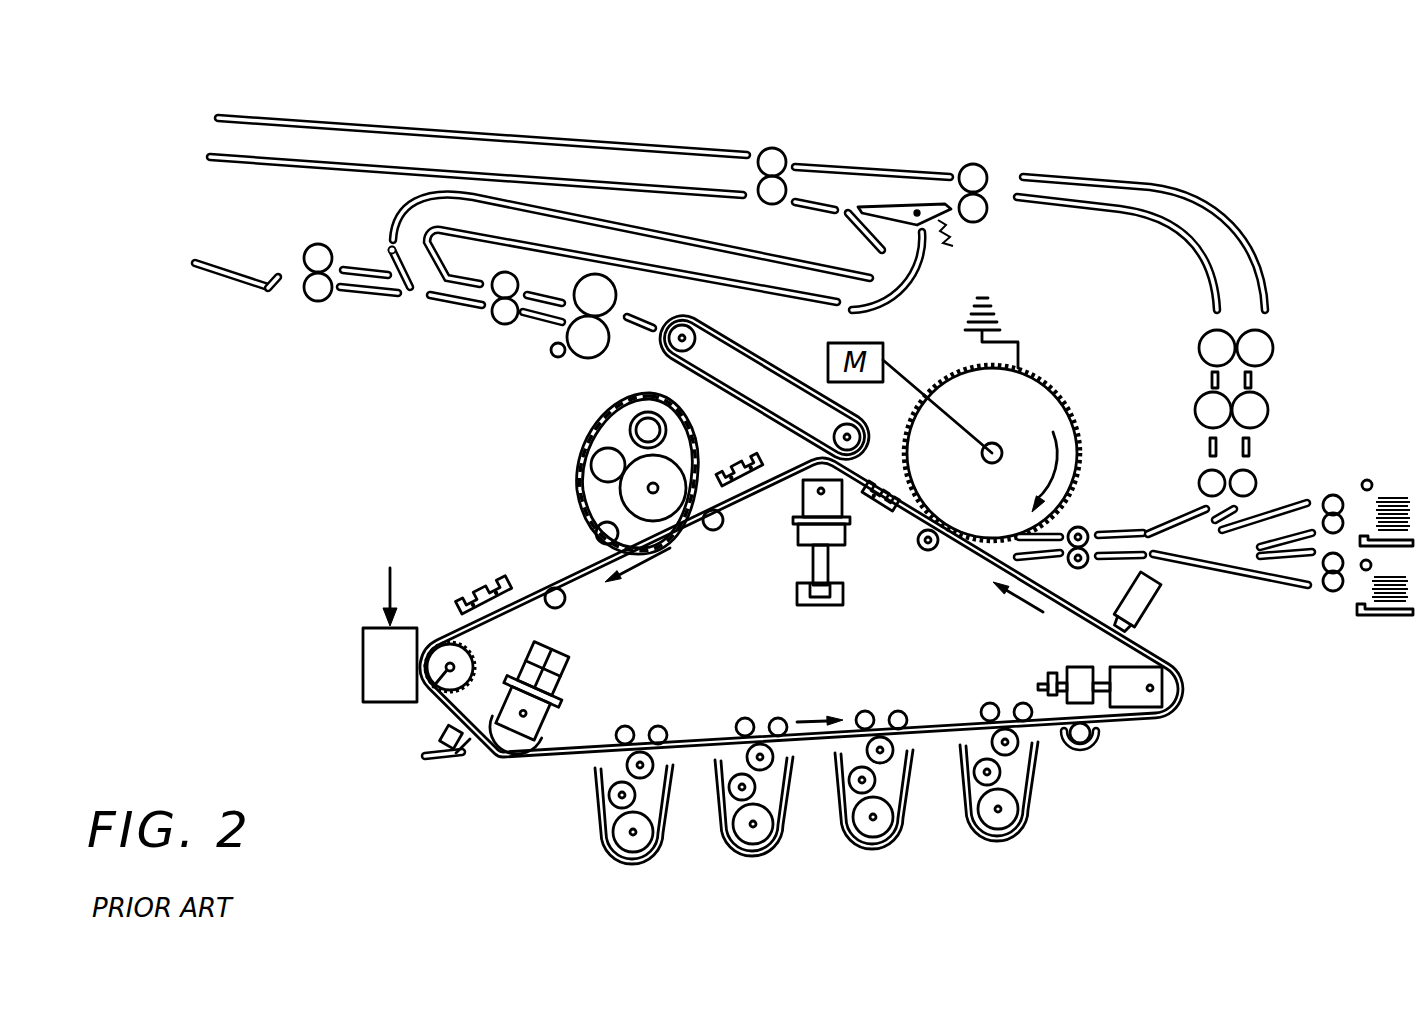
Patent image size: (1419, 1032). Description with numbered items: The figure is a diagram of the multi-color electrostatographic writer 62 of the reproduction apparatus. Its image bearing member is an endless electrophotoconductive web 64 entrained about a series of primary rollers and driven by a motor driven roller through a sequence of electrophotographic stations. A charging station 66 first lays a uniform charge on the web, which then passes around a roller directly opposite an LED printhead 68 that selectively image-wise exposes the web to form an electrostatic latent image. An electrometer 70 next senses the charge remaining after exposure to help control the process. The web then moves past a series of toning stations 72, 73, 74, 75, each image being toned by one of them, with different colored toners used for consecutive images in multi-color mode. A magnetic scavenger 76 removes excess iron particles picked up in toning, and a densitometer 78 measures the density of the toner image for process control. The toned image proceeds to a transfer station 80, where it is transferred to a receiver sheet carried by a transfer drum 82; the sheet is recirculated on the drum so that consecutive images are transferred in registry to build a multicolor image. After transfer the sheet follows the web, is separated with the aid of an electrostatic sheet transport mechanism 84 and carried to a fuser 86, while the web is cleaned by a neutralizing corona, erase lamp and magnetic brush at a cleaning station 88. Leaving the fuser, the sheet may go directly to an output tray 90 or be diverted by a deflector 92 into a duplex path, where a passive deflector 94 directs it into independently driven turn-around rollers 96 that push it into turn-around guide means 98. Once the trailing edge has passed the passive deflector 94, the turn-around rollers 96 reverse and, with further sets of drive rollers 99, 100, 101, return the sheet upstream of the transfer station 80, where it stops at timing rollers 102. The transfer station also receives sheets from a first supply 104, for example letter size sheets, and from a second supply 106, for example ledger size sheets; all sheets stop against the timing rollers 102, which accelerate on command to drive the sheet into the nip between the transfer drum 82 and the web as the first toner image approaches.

The writer 62 is at (1118, 118).
The electrophotoconductive web 64 is at (573, 760).
The charging station 66 is at (490, 590).
The LED printhead 68 is at (363, 662).
The electrometer 70 is at (458, 760).
The toning station 72 is at (668, 833).
The toning station 73 is at (788, 828).
The toning station 74 is at (910, 822).
The toning station 75 is at (1037, 816).
The magnetic scavenger 76 is at (1087, 748).
The densitometer 78 is at (1150, 583).
The transfer station 80 is at (1086, 504).
The transfer drum 82 is at (1050, 402).
The electrostatic sheet transport mechanism 84 is at (789, 366).
The fuser 86 is at (608, 300).
The cleaning station 88 is at (743, 418).
The output tray 90 is at (253, 287).
The deflector 92 is at (412, 290).
The passive deflector 94 is at (888, 208).
The turn-around rollers 96 is at (773, 148).
The turn-around guide means 98 is at (557, 162).
The drive rollers 99 is at (973, 165).
The drive rollers 100 is at (1262, 352).
The drive rollers 101 is at (1250, 478).
The timing rollers 102 is at (1075, 568).
The first supply 104 is at (1352, 472).
The second supply 106 is at (1338, 608).